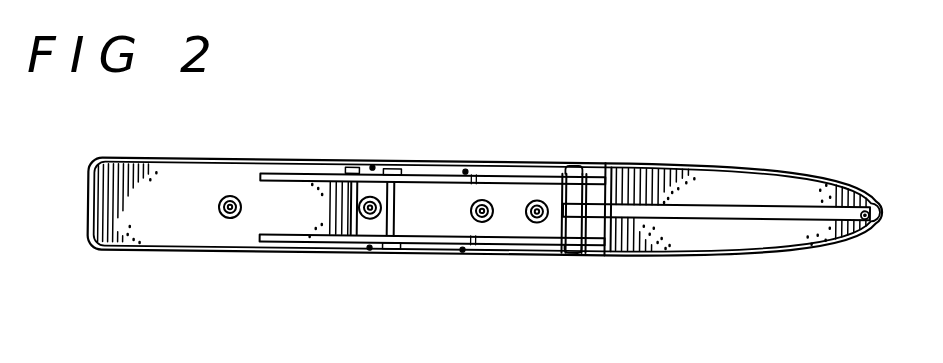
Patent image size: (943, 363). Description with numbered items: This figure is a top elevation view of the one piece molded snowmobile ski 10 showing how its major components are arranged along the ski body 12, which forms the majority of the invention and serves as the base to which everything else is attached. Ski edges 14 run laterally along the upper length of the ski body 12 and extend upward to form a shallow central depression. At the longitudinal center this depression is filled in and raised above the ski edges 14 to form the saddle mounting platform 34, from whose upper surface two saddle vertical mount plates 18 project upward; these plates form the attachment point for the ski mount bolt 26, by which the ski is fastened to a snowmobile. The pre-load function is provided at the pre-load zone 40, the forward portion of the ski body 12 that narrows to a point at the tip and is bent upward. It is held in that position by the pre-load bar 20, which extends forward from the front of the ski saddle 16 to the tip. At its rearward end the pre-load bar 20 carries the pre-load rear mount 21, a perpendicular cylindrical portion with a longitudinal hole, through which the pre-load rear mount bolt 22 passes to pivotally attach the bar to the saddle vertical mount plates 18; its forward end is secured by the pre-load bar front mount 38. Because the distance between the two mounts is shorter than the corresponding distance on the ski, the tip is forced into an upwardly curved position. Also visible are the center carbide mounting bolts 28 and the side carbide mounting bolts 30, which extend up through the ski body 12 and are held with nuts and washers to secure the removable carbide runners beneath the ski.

The one piece molded snowmobile ski 10 is at (376, 137).
The ski body 12 is at (598, 143).
The ski edges 14 is at (697, 163).
The ski saddle 16 is at (430, 157).
The saddle vertical mount plates 18 is at (535, 240).
The pre-load bar 20 is at (710, 218).
The pre-load rear mount 21 is at (573, 227).
The pre-load rear mount bolt 22 is at (572, 255).
The ski mount bolt 26 is at (388, 252).
The center carbide mounting bolts 28 is at (360, 216).
The side carbide mounting bolts 30 is at (466, 169).
The saddle mounting platform 34 is at (352, 165).
The pre-load bar front mount 38 is at (868, 198).
The pre-load zone 40 is at (740, 243).